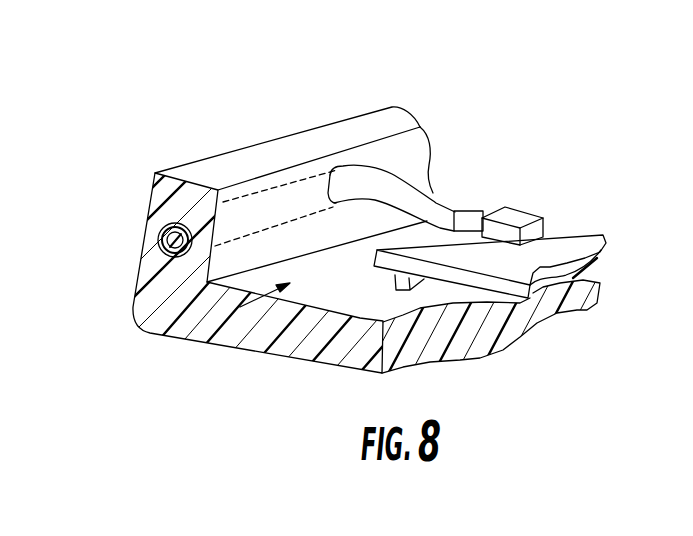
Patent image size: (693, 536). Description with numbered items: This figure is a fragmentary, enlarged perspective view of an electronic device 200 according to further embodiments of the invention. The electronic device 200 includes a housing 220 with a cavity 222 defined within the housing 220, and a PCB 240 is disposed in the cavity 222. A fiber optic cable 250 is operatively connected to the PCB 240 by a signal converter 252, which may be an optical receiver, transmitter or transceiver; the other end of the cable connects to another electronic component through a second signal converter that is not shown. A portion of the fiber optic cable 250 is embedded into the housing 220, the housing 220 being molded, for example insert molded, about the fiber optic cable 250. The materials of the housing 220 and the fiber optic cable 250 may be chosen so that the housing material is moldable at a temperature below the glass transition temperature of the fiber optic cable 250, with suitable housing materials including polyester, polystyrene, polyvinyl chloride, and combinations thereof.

The electronic device 200 is at (552, 113).
The housing 220 is at (311, 352).
The cavity 222 is at (163, 335).
The PCB 240 is at (580, 235).
The fiber optic cable 250 is at (275, 190).
The signal converter 252 is at (510, 212).